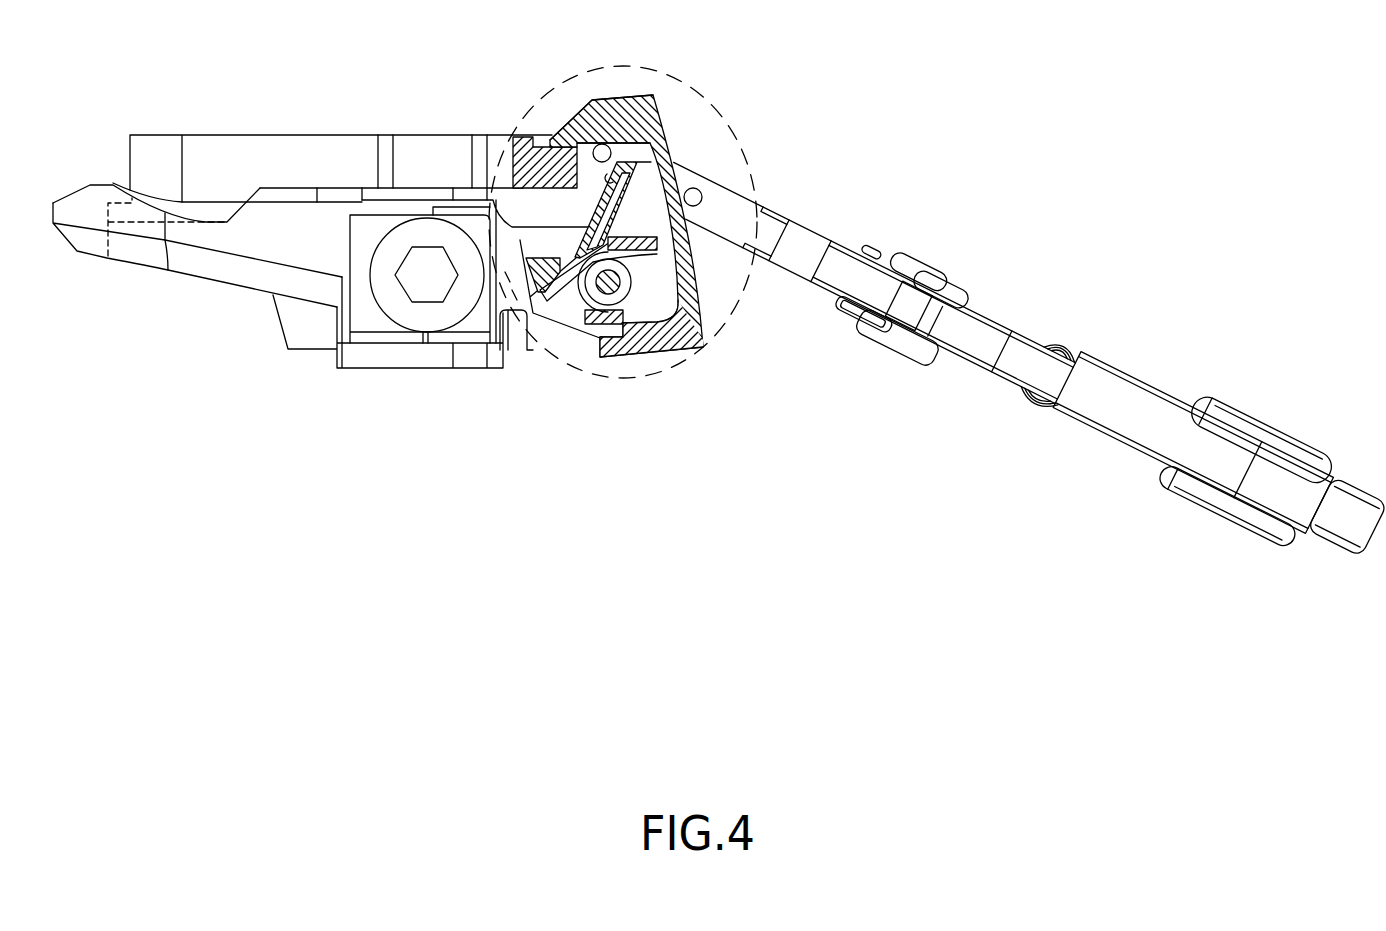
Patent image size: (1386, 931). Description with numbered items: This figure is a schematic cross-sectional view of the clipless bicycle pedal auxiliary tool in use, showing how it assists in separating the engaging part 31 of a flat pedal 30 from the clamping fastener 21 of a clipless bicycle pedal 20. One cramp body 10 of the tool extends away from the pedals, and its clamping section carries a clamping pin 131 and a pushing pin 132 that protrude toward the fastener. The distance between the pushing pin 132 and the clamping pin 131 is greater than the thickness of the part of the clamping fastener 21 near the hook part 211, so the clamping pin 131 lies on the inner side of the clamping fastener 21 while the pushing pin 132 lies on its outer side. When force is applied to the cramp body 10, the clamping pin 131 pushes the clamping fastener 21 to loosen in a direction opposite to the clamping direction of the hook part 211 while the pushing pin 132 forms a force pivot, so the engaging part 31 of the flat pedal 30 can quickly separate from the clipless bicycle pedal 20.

The cramp body 10 is at (1041, 293).
The clipless bicycle pedal 20 is at (203, 294).
The flat pedal 30 is at (305, 132).
The engaging part 31 is at (550, 136).
The clamping fastener 21 is at (659, 122).
The hook part 211 is at (568, 124).
The clamping pin 131 is at (603, 145).
The pushing pin 132 is at (701, 193).